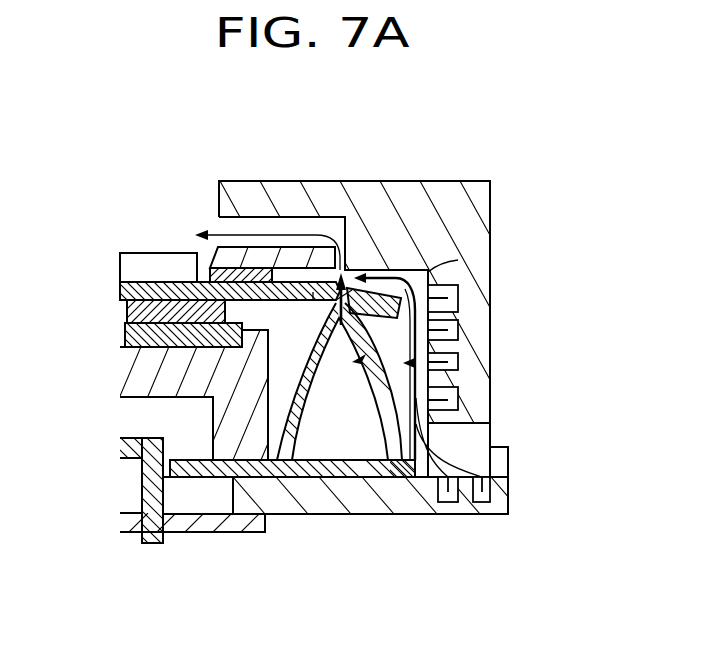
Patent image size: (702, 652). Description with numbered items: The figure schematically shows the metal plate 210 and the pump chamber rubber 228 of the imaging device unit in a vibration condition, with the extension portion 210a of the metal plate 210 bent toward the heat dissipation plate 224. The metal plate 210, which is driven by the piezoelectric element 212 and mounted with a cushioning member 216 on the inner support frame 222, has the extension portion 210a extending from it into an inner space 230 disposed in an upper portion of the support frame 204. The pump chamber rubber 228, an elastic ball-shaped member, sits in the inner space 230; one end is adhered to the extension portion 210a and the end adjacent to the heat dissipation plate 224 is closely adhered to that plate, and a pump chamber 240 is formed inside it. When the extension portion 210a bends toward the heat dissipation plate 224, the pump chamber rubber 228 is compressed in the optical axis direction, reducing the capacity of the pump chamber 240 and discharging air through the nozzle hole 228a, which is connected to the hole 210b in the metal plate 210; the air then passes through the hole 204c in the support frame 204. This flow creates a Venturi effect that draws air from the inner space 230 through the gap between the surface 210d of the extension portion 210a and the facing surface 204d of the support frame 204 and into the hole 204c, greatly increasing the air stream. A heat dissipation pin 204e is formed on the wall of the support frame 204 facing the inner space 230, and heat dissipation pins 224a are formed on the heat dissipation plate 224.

The support frame 204 is at (455, 205).
The hole 204c is at (356, 272).
The surface 204d is at (432, 276).
The heat dissipation pin 204e is at (450, 312).
The metal plate 210 is at (135, 292).
The extension portion 210a is at (389, 292).
The hole 210b is at (313, 292).
The surface 210d is at (352, 290).
The piezoelectric element 212 is at (140, 310).
The cushioning member 216 is at (148, 332).
The inner support frame 222 is at (175, 377).
The heat dissipation plate 224 is at (362, 500).
The heat dissipation pins 224a is at (462, 492).
The pump chamber rubber 228 is at (392, 378).
The hole 228a is at (406, 326).
The inner space 230 is at (410, 363).
The pump chamber 240 is at (357, 359).